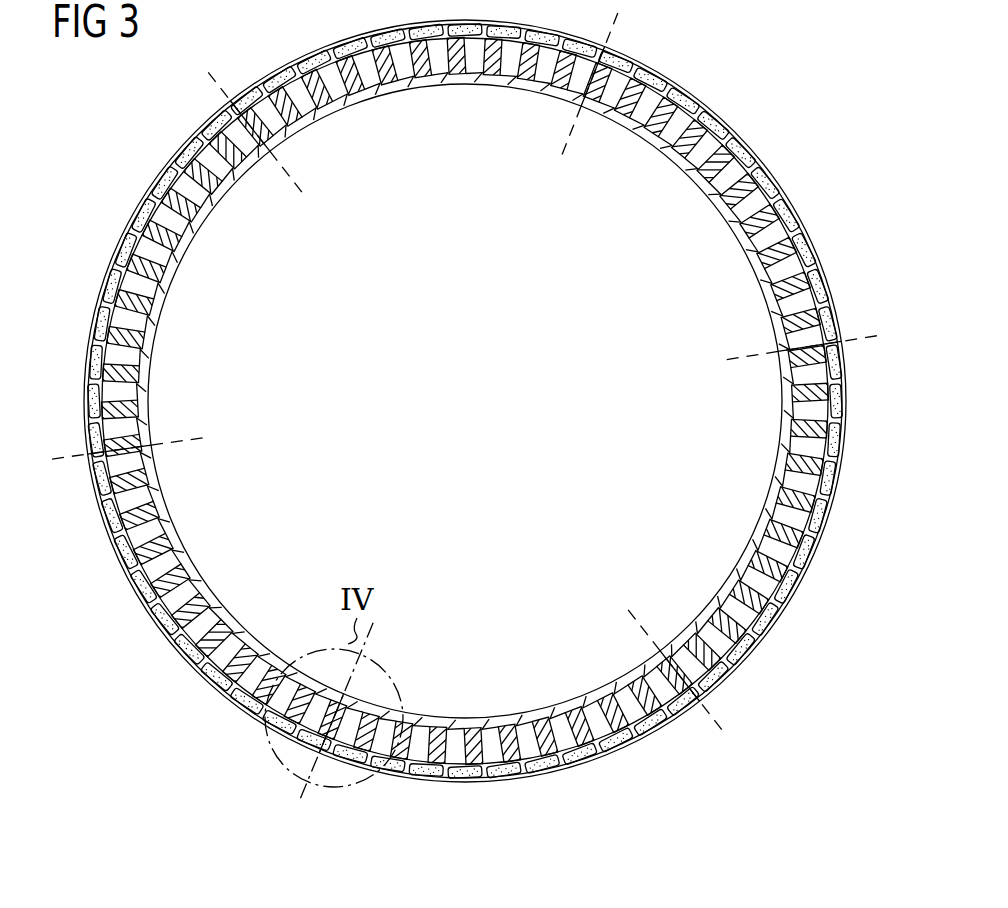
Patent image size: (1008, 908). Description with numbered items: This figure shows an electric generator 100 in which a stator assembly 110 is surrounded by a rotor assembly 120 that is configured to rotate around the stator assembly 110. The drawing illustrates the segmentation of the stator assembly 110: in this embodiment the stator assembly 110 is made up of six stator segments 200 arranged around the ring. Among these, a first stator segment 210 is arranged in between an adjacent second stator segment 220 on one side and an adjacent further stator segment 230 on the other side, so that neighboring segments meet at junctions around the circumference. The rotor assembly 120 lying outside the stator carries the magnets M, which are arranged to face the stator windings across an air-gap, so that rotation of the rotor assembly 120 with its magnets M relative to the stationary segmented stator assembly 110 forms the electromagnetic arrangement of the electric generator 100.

The electric generator 100 is at (818, 100).
The stator assembly 110 is at (200, 252).
The rotor assembly 120 is at (240, 712).
The stator segments 200 is at (427, 122).
The first stator segment 210 is at (248, 556).
The second stator segment 220 is at (512, 688).
The further stator segment 230 is at (205, 338).
The magnets M is at (413, 778).